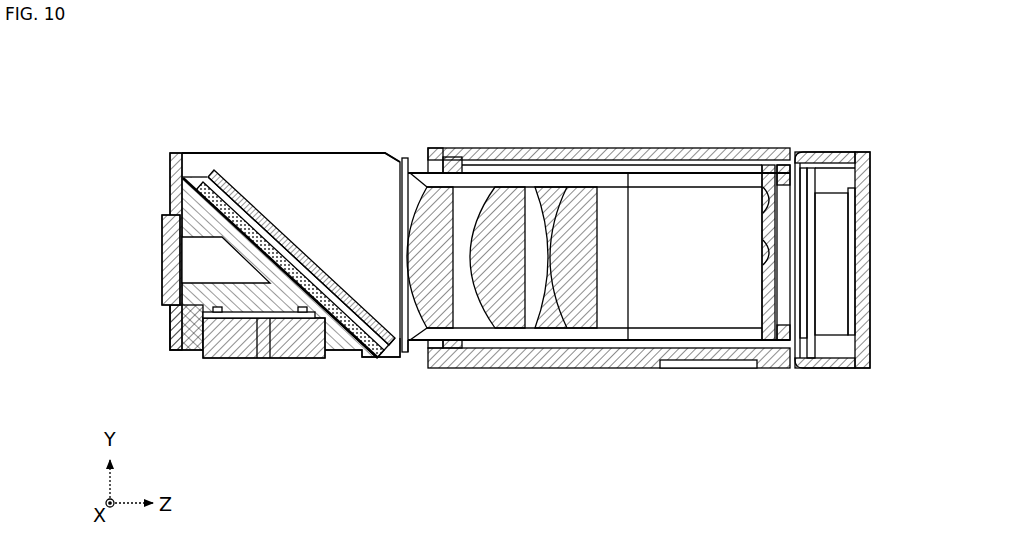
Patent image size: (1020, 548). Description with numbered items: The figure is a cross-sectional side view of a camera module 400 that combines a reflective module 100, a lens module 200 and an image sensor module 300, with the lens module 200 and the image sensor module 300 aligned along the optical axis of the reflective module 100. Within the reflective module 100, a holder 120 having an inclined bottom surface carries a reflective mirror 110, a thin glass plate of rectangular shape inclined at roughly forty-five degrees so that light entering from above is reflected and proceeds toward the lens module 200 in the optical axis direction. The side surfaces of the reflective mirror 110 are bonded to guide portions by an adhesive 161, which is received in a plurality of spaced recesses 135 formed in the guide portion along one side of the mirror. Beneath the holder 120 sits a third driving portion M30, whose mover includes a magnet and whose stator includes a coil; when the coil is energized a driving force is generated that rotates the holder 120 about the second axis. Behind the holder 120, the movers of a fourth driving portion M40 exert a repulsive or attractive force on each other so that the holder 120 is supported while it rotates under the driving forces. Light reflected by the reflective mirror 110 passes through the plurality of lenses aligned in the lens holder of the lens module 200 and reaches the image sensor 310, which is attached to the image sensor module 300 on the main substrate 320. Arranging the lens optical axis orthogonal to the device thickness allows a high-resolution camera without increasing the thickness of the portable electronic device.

The camera module 400 is at (204, 80).
The reflective mirror 110 is at (230, 174).
The first recesses 135 is at (242, 184).
The adhesive 161 is at (295, 228).
The holder 120 is at (396, 138).
The fourth driving portion M40 is at (159, 258).
The third driving portion M30 is at (248, 370).
The reflective module 100 is at (335, 380).
The lens module 200 is at (520, 375).
The image sensor module 300 is at (833, 375).
The image sensor 310 is at (851, 311).
The main substrate 320 is at (870, 258).